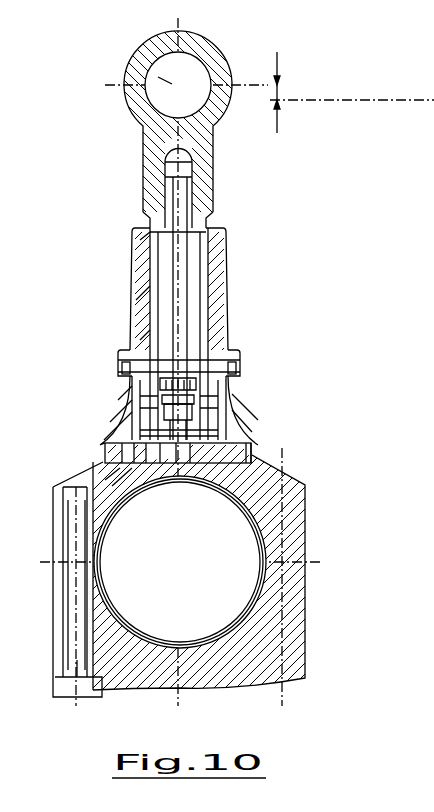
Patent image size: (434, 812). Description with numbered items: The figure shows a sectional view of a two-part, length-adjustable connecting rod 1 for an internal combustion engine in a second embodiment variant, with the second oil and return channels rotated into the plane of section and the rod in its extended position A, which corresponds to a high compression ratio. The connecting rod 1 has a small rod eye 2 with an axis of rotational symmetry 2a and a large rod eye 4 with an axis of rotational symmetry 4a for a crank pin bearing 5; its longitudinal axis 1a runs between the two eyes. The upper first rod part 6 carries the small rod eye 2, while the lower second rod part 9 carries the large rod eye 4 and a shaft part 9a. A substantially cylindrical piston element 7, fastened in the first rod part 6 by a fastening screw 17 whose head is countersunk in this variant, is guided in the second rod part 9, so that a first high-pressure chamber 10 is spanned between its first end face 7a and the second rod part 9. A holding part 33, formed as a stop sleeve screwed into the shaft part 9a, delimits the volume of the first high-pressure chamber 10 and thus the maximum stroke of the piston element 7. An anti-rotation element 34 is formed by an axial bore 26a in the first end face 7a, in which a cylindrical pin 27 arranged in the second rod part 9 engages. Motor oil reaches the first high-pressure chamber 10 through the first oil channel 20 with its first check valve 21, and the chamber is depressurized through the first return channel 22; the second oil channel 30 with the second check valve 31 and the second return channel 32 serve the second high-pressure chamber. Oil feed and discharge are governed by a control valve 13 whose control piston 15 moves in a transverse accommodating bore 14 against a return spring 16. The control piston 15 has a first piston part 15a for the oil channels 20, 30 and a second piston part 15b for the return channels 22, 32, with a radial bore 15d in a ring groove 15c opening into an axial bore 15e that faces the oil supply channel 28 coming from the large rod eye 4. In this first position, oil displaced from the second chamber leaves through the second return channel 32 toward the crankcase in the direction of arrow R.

The connecting rod 1 is at (274, 291).
The longitudinal axis 1a is at (276, 650).
The small rod eye 2 is at (192, 70).
The axis of rotational symmetry of the small rod eye 2a is at (146, 72).
The large rod eye 4 is at (282, 605).
The axis of rotational symmetry of the large rod eye 4a is at (186, 572).
The crank pin bearing 5 is at (147, 633).
The first rod part 6 is at (200, 151).
The piston element 7 is at (120, 365).
The first end face 7a is at (130, 398).
The second rod part 9 is at (290, 508).
The shaft part 9a is at (212, 258).
The first high-pressure chamber 10 is at (240, 418).
The control valve 13 is at (135, 501).
The accommodating bore 14 is at (245, 531).
The control piston 15 is at (221, 501).
The first piston part 15a is at (137, 515).
The second piston part 15b is at (224, 567).
The ring groove 15c is at (191, 515).
The radial bore 15d is at (118, 453).
The axial bore 15e is at (100, 464).
The return spring 16 is at (286, 469).
The fastening screw 17 is at (188, 334).
The first oil channel 20 is at (177, 501).
The first check valve 21 is at (128, 346).
The first return channel 22 is at (262, 443).
The axial bore 26a is at (240, 361).
The cylindrical pin 27 is at (236, 400).
The oil supply channel 28 is at (126, 583).
The second oil channel 30 is at (130, 388).
The second check valve 31 is at (128, 432).
The second return channel 32 is at (246, 378).
The holding part 33 is at (134, 318).
The anti-rotation element 34 is at (246, 388).
The extended position A is at (106, 180).
The arrow R is at (303, 453).